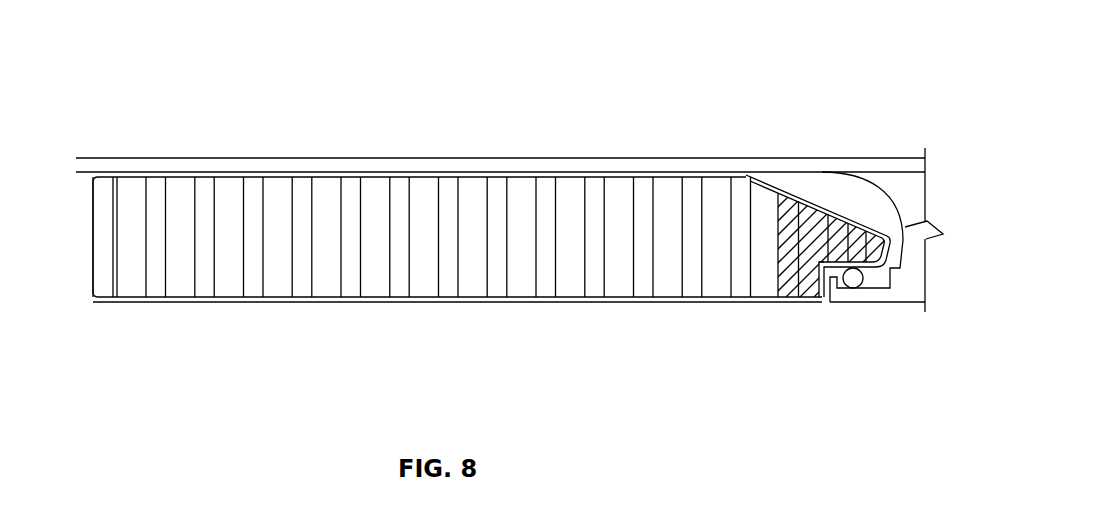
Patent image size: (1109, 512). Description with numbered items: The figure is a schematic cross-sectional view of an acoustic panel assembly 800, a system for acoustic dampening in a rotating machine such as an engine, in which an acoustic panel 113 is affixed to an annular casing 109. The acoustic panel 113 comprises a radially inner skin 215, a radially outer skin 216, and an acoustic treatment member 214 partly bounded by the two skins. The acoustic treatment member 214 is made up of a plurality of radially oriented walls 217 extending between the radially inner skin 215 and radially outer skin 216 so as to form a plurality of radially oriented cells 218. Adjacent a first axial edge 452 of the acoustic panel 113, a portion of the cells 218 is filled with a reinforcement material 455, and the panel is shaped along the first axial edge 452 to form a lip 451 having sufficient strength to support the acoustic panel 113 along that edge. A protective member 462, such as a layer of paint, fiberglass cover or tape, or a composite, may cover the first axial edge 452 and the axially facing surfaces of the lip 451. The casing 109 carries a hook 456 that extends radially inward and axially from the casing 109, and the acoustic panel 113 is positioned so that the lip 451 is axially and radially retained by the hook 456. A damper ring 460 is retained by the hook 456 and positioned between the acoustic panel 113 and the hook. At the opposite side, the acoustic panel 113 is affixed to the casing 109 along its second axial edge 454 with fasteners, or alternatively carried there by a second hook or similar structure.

The acoustic panel assembly 800 is at (156, 41).
The casing 109 is at (123, 164).
The radially outer skin 216 is at (223, 173).
The acoustic treatment member 214 is at (479, 193).
The radially oriented walls 217 is at (683, 193).
The radially oriented cells 218 is at (767, 208).
The protective member 462 is at (862, 250).
The first axial edge 452 is at (918, 222).
The second axial edge 454 is at (93, 247).
The radially inner skin 215 is at (175, 298).
The acoustic panel 113 is at (454, 247).
The reinforcement material 455 is at (790, 240).
The lip 451 is at (808, 287).
The damper ring 460 is at (853, 290).
The hook 456 is at (887, 297).